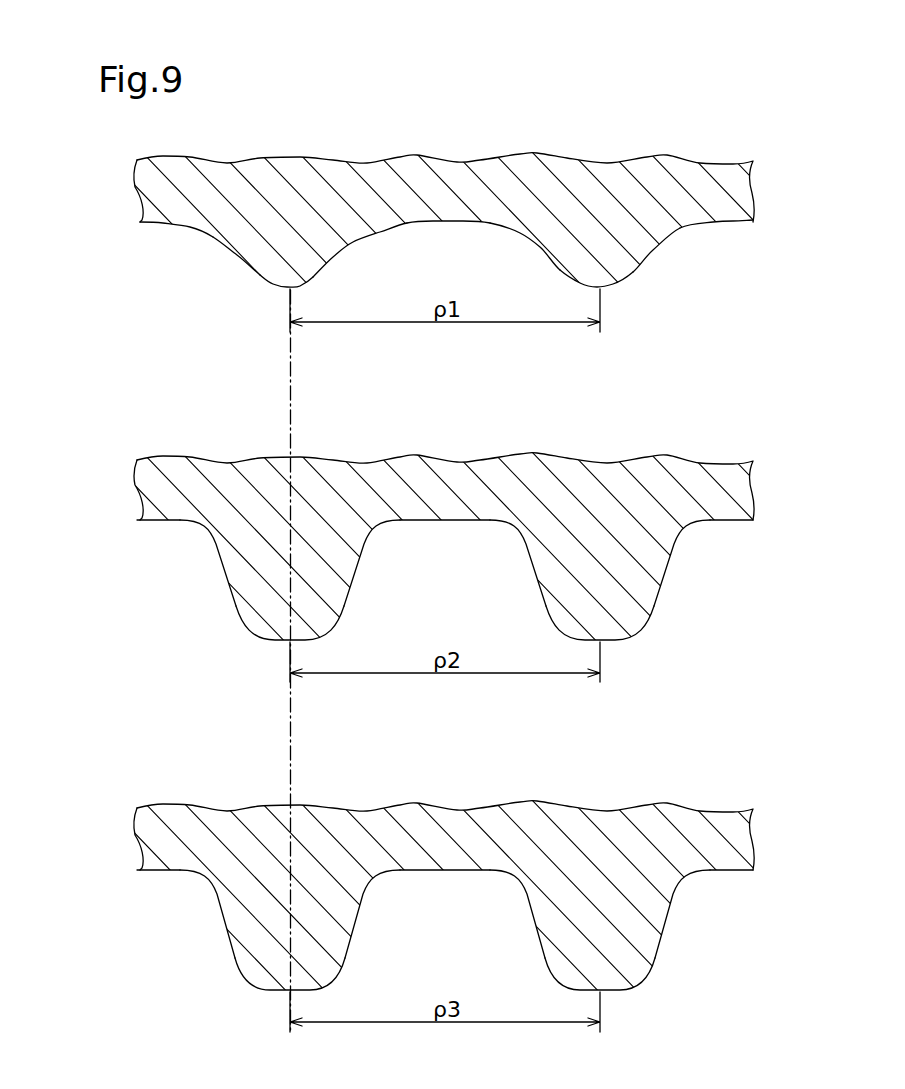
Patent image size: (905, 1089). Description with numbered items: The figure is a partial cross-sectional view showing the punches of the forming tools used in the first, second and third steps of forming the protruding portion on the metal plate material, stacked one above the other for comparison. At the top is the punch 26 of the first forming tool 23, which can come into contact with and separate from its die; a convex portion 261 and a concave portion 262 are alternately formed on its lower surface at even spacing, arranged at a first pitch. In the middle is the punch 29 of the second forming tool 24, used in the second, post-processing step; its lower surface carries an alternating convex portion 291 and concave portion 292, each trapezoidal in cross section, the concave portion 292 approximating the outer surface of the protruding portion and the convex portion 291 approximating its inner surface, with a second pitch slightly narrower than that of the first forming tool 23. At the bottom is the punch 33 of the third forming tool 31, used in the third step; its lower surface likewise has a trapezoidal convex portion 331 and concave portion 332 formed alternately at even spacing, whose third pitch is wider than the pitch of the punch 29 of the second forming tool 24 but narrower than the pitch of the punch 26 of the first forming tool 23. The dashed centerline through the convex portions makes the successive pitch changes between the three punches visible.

The first forming tool 23 is at (754, 184).
The punch 26 is at (750, 208).
The convex portion 261 is at (302, 289).
The concave portion 262 is at (152, 222).
The second forming tool 24 is at (754, 484).
The punch 29 is at (750, 508).
The convex portion 291 is at (306, 641).
The concave portion 292 is at (152, 521).
The third forming tool 31 is at (755, 833).
The punch 33 is at (750, 855).
The convex portion 331 is at (306, 991).
The concave portion 332 is at (152, 871).